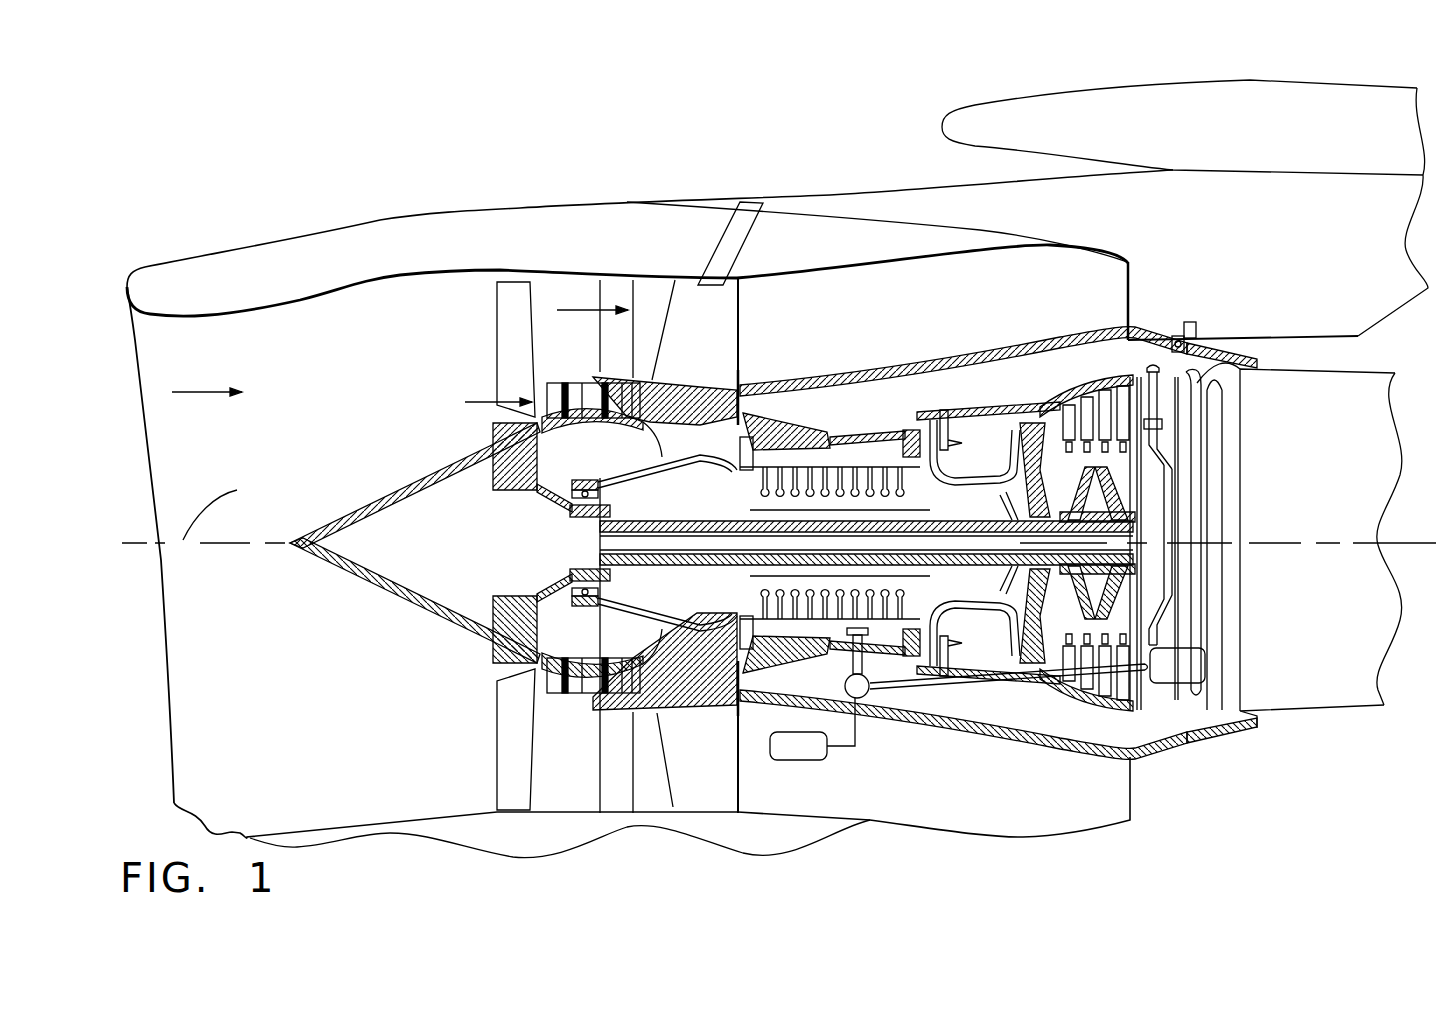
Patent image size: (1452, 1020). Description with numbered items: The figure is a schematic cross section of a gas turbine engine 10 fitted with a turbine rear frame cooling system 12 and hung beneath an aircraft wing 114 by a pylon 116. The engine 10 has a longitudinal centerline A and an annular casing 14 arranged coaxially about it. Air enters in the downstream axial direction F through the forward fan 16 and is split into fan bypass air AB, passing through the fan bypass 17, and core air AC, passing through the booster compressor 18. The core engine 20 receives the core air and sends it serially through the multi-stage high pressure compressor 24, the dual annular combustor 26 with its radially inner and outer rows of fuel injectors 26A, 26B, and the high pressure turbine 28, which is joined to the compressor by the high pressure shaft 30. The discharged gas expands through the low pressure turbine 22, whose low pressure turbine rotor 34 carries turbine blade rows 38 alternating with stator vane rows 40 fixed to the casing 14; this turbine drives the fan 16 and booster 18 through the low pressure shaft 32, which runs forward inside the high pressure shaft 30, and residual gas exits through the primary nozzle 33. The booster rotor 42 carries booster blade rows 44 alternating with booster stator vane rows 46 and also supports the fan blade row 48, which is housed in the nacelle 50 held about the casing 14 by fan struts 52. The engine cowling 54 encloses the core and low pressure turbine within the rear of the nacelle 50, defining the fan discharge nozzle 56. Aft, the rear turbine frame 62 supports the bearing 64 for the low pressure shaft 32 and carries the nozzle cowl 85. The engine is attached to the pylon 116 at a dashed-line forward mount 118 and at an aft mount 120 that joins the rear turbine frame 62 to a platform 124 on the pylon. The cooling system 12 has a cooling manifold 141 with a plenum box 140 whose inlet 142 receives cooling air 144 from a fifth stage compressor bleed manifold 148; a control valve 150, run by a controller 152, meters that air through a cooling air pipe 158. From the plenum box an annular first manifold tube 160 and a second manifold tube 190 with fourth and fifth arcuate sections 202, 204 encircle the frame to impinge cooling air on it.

The gas turbine engine 10 is at (1230, 260).
The turbine rear frame cooling system 12 is at (1222, 317).
The annular casing 14 is at (647, 375).
The forward fan 16 is at (363, 697).
The fan bypass 17 is at (803, 318).
The booster compressor 18 is at (567, 717).
The core engine 20 is at (917, 418).
The low pressure turbine 22 is at (1100, 377).
The multi-stage high pressure compressor 24 is at (750, 485).
The dual annular combustor 26 is at (983, 440).
The radially inner row of fuel injectors 26A is at (963, 653).
The radially outer row of fuel injectors 26B is at (957, 665).
The high pressure turbine 28 is at (1043, 402).
The high pressure shaft 30 is at (953, 492).
The low pressure shaft 32 is at (673, 567).
The primary nozzle 33 is at (1303, 423).
The low pressure turbine rotor 34 is at (1140, 485).
The turbine blade rows 38 is at (1040, 380).
The stator vane rows 40 is at (1125, 350).
The booster rotor 42 is at (630, 427).
The booster blade rows 44 is at (593, 417).
The booster stator vane rows 46 is at (590, 387).
The fan blade row 48 is at (497, 337).
The nacelle 50 is at (285, 235).
The fan struts 52 is at (657, 308).
The engine cowling 54 is at (983, 343).
The fan discharge nozzle 56 is at (1130, 297).
The rear turbine frame 62 is at (1162, 418).
The bearing 64 is at (1127, 520).
The nozzle cowl 85 is at (1293, 369).
The aircraft wing 114 is at (1000, 103).
The pylon 116 is at (1210, 228).
The forward mount 118 is at (728, 242).
The aft mount 120 is at (1190, 327).
The platform 124 is at (1217, 347).
The plenum box 140 is at (1180, 662).
The cooling manifold 141 is at (1173, 637).
The inlet 142 is at (1183, 730).
The cooling air 144 is at (1083, 687).
The fifth stage compressor bleed manifold 148 is at (853, 648).
The control valve 150 is at (863, 693).
The controller 152 is at (800, 763).
The cooling air pipe 158 is at (930, 677).
The annular first manifold tube 160 is at (1167, 468).
The second manifold tube 190 is at (1190, 415).
The fourth arcuate section 202 is at (1190, 587).
The fifth arcuate section 204 is at (1227, 377).
The downstream axial direction F is at (207, 390).
The longitudinal centerline A is at (218, 508).
The fan bypass air AB is at (597, 305).
The core air AC is at (498, 393).